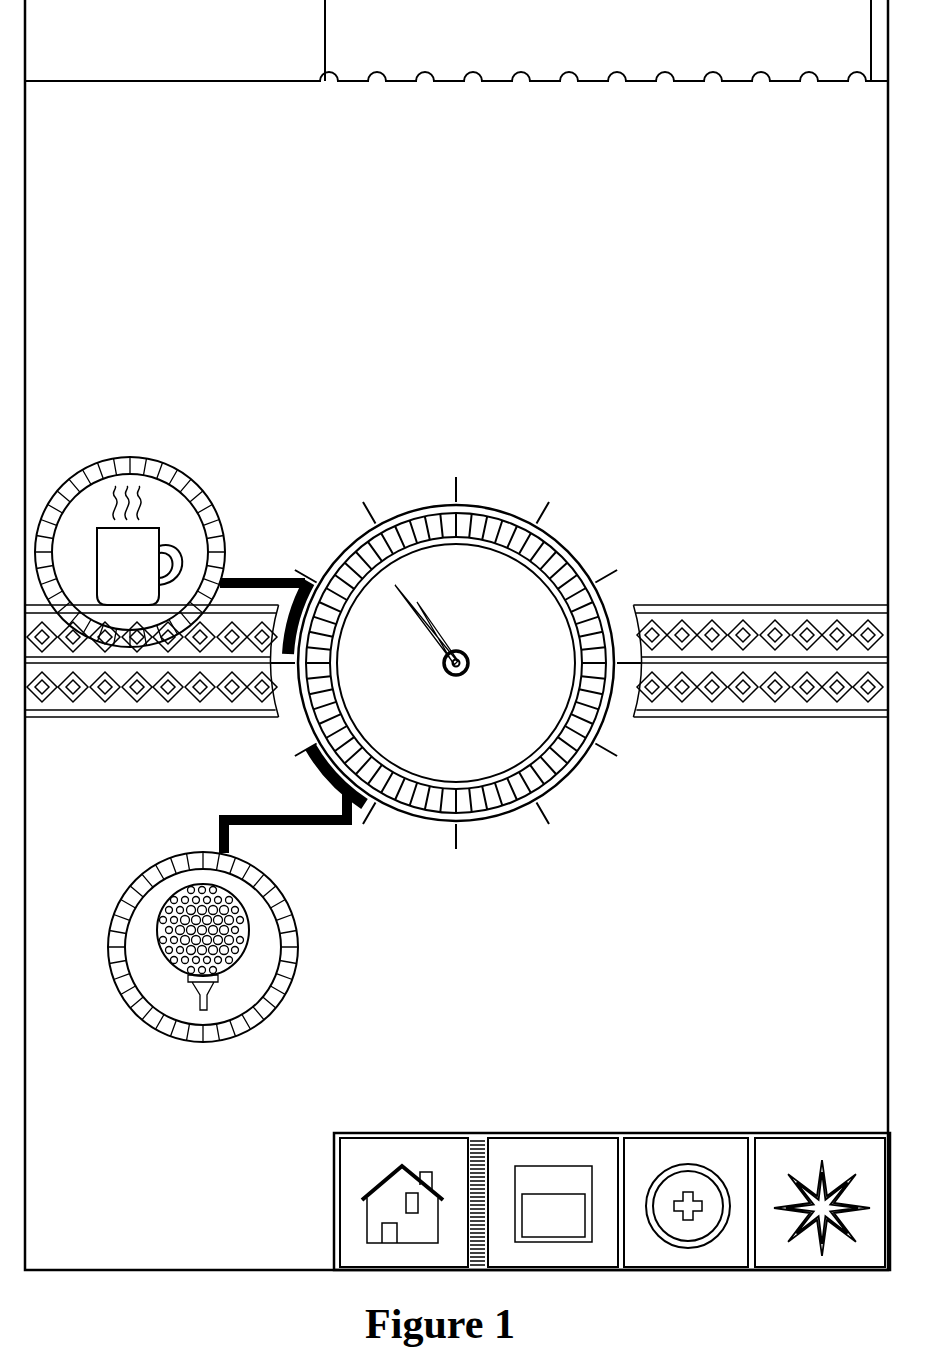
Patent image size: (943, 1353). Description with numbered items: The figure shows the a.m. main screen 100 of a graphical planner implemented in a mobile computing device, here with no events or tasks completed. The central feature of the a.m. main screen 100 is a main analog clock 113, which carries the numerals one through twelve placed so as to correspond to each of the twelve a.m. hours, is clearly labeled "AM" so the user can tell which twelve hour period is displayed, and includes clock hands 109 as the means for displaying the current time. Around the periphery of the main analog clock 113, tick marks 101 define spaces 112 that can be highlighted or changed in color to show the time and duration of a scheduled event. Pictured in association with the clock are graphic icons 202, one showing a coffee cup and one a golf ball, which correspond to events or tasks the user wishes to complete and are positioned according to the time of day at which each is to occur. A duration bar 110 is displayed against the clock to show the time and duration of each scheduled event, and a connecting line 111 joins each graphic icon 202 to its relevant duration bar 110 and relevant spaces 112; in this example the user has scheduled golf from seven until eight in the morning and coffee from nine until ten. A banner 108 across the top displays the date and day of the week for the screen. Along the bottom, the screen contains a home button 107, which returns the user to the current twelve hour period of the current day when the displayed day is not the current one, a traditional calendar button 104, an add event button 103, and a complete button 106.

The a.m. main screen 100 is at (246, 323).
The tick marks 101 is at (560, 770).
The add event button 103 is at (683, 1157).
The traditional calendar button 104 is at (557, 1157).
The complete button 106 is at (825, 1157).
The home button 107 is at (403, 1157).
The banner 108 is at (532, 55).
The clock hands 109 is at (430, 612).
The duration bar 110 is at (298, 575).
The connecting line 111 is at (257, 582).
The spaces 112 is at (585, 725).
The main analog clock 113 is at (435, 757).
The graphic icons 202 is at (153, 495).